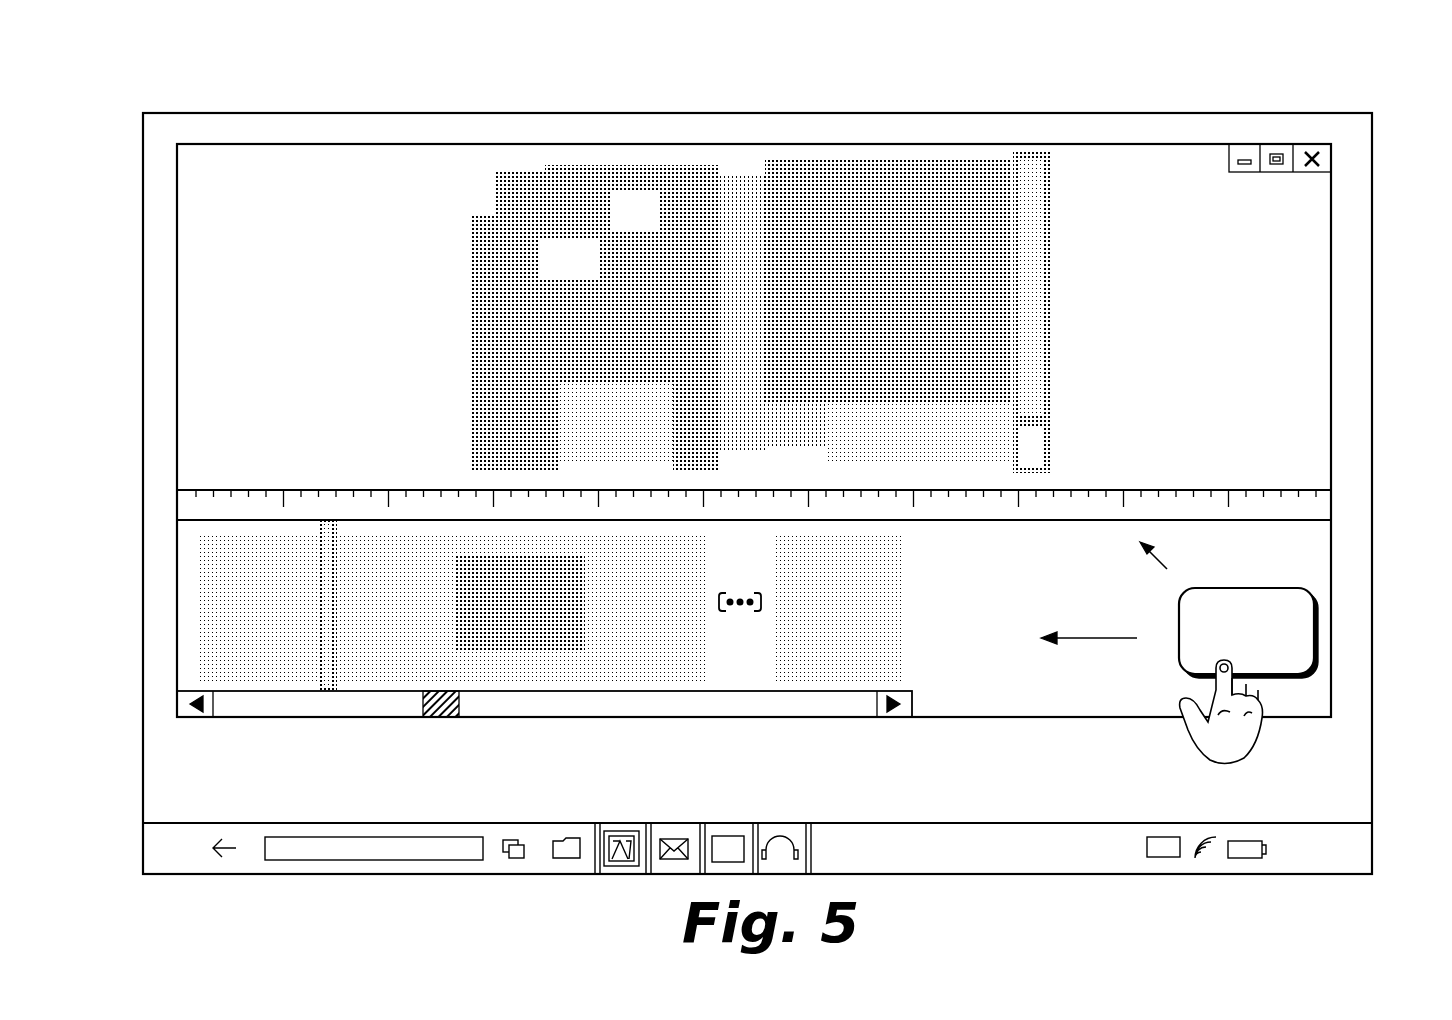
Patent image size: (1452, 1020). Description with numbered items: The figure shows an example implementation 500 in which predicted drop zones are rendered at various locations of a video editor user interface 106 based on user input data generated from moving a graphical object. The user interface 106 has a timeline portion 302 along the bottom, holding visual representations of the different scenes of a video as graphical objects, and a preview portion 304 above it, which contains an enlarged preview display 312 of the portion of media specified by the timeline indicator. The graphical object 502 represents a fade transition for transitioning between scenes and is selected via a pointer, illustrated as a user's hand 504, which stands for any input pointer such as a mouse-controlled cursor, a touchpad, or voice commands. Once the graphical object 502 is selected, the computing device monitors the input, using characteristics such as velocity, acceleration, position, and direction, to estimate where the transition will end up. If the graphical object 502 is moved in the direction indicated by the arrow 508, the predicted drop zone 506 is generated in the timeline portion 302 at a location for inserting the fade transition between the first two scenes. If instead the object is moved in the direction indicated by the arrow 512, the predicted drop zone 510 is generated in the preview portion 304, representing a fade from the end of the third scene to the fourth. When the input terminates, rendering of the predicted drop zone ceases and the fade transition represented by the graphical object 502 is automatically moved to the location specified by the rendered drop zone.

The example implementation 500 is at (195, 83).
The user interface 106 is at (980, 143).
The preview display 312 is at (580, 165).
The preview portion 304 is at (175, 272).
The timeline portion 302 is at (175, 617).
The predicted drop zone 510 is at (1050, 295).
The predicted drop zone 506 is at (322, 522).
The arrow 512 is at (1160, 561).
The arrow 508 is at (1073, 640).
The graphical object 502 is at (1318, 628).
The user's hand 504 is at (1220, 758).